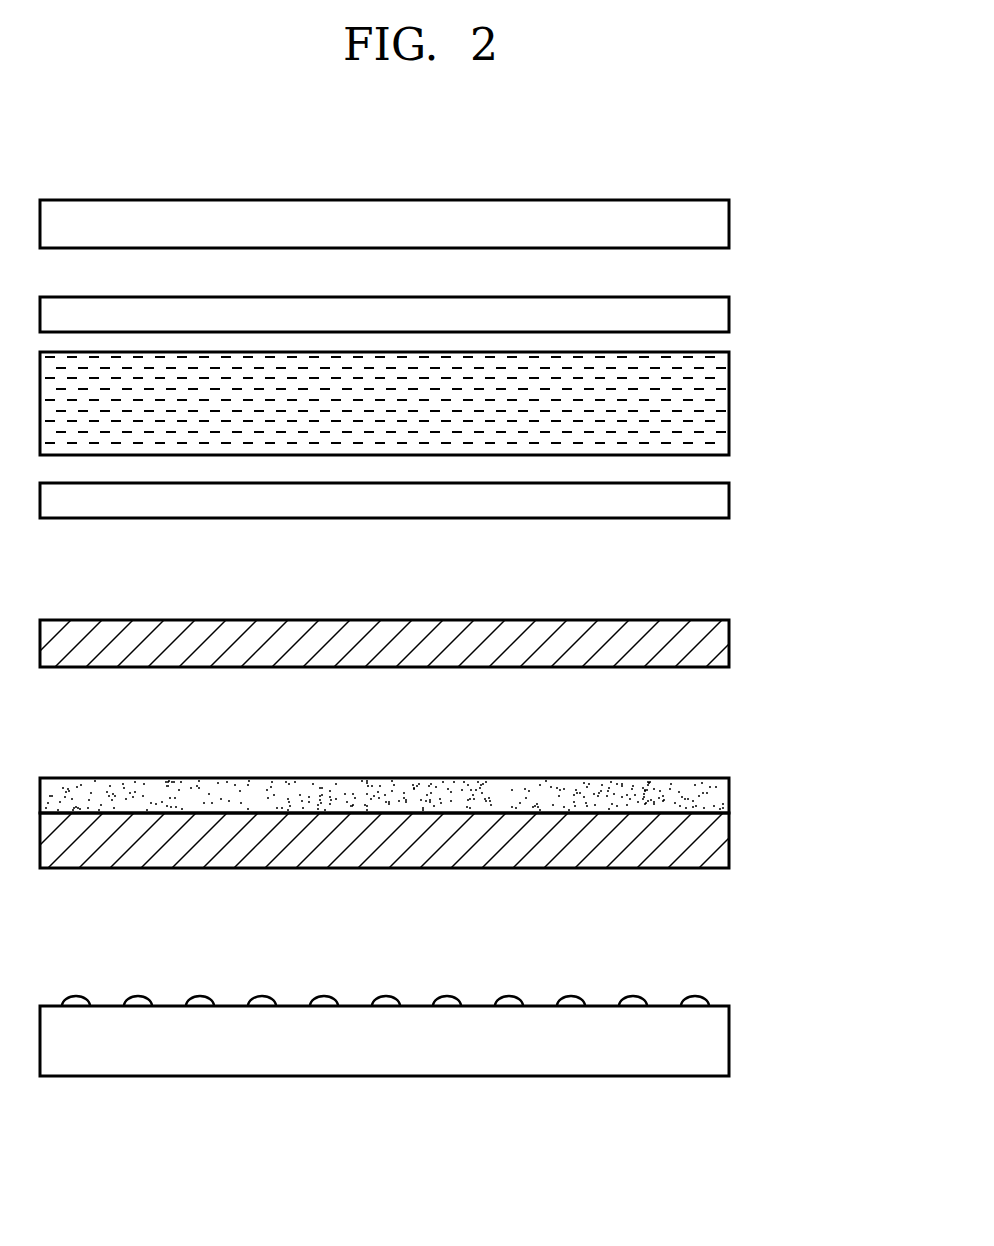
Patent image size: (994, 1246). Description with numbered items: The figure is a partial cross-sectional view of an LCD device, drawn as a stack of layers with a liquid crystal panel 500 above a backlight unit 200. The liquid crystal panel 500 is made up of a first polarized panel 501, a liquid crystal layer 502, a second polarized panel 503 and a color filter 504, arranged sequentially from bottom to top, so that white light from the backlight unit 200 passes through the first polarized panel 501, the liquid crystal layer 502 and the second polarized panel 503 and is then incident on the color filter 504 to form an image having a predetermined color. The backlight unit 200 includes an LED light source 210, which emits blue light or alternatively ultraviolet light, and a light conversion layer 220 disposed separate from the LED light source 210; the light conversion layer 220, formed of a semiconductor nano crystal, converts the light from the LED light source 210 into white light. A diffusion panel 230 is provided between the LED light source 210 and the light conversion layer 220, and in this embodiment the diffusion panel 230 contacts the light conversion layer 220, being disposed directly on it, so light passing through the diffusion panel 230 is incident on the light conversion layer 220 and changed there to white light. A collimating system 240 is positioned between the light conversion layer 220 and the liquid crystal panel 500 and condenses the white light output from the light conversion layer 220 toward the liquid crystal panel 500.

The liquid crystal panel 500 is at (842, 248).
The color filter 504 is at (729, 223).
The second polarized panel 503 is at (729, 313).
The liquid crystal layer 502 is at (729, 403).
The first polarized panel 501 is at (729, 500).
The backlight unit 200 is at (842, 668).
The collimating system 240 is at (729, 643).
The light conversion layer 220 is at (729, 797).
The diffusion panel 230 is at (729, 840).
The LED light source 210 is at (729, 1040).